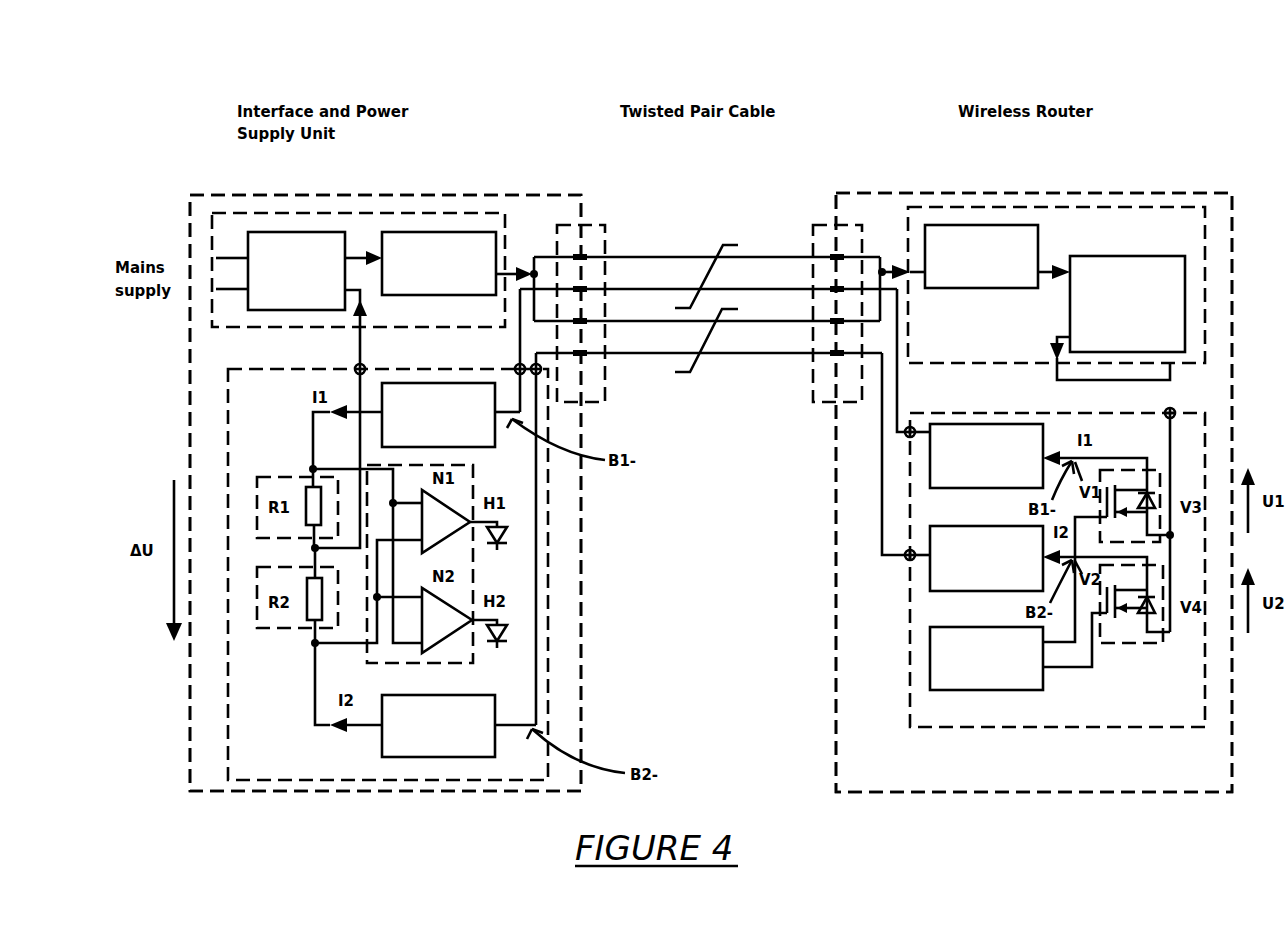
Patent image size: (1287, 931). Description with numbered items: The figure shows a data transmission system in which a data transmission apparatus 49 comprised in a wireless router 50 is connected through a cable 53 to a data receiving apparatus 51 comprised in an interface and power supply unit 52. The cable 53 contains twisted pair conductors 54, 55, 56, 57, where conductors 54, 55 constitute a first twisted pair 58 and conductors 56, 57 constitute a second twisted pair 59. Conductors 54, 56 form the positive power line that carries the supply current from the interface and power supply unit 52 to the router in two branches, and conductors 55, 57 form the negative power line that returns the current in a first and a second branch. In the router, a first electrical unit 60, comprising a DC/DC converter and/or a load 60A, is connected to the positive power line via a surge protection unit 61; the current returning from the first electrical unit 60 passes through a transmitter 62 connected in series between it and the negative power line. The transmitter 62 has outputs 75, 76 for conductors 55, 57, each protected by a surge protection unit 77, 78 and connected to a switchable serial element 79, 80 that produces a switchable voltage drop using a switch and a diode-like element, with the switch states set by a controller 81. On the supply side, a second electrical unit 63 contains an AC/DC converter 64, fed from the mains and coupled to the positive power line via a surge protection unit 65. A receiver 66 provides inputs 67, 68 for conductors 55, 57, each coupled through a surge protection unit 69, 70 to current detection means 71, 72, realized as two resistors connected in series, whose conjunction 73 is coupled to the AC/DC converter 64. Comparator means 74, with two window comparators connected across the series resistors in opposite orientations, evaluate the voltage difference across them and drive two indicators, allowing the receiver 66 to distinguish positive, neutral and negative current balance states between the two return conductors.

The data transmission apparatus 49 is at (1097, 191).
The wireless router 50 is at (1003, 82).
The data receiving apparatus 51 is at (437, 191).
The interface and power supply unit 52 is at (422, 80).
The cable 53 is at (715, 82).
The conductor 54 is at (755, 256).
The conductor 55 is at (755, 288).
The conductor 56 is at (755, 320).
The conductor 57 is at (755, 352).
The first twisted pair 58 is at (703, 273).
The second twisted pair 59 is at (703, 337).
The first electrical unit 60 is at (910, 247).
The DC/DC converter and/or load 60A is at (1127, 304).
The surge protection unit 61 is at (981, 256).
The transmitter 62 is at (973, 412).
The second electrical unit 63 is at (507, 224).
The AC/DC converter 64 is at (296, 271).
The surge protection unit 65 is at (439, 263).
The receiver 66 is at (268, 368).
The input 67 is at (514, 366).
The input 68 is at (532, 348).
The surge protection unit 69 is at (438, 415).
The surge protection unit 70 is at (438, 726).
The current detection means 71 is at (303, 478).
The current detection means 72 is at (270, 632).
The conjunction 73 is at (312, 549).
The comparator means 74 is at (477, 478).
The output 75 is at (908, 426).
The output 76 is at (909, 548).
The surge protection unit 77 is at (986, 456).
The surge protection unit 78 is at (986, 558).
The switchable serial element 79 is at (1153, 468).
The switchable serial element 80 is at (1115, 647).
The controller 81 is at (986, 658).